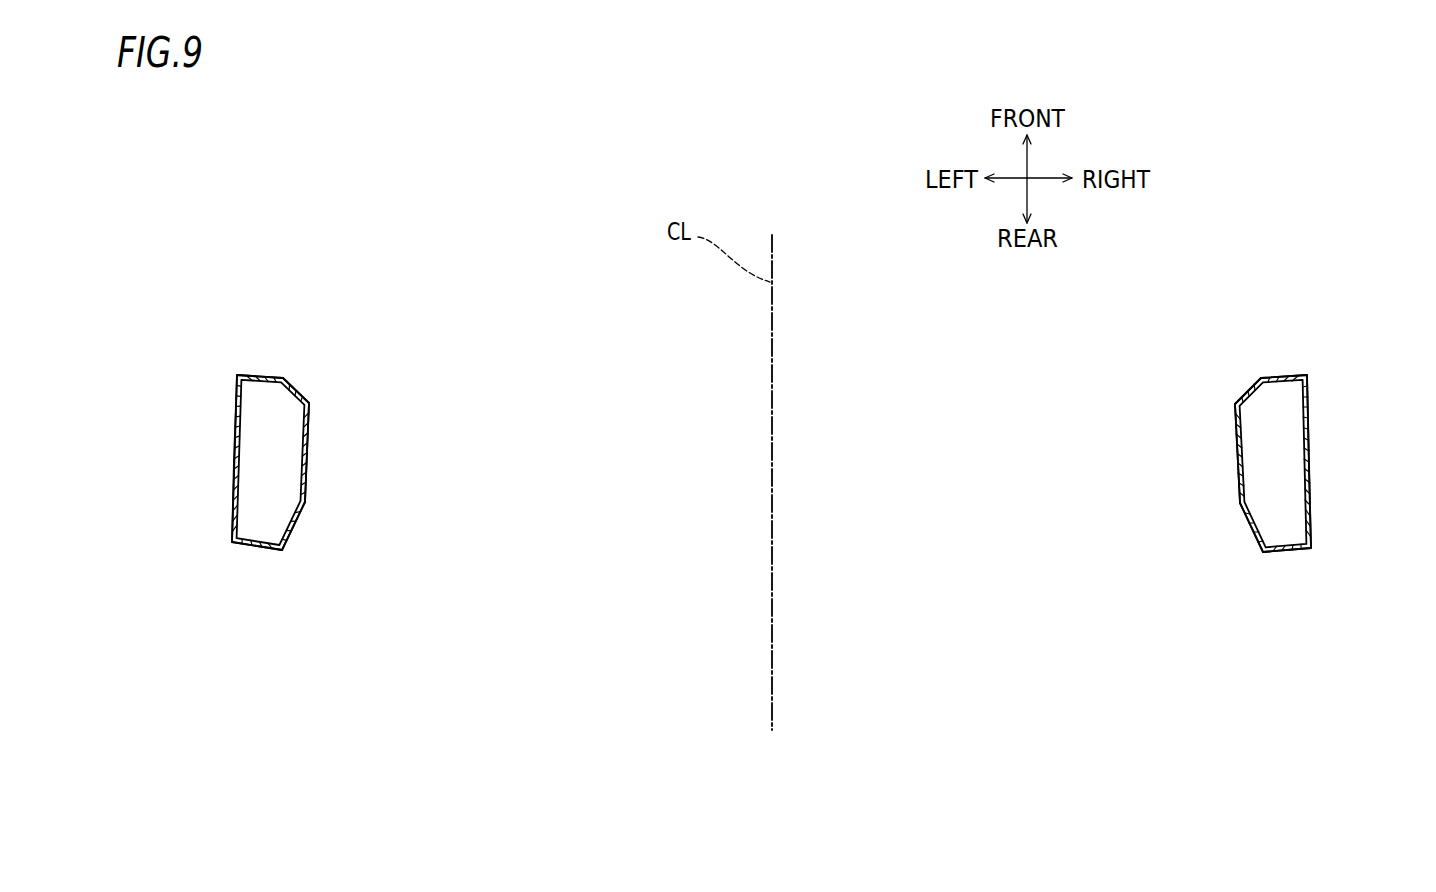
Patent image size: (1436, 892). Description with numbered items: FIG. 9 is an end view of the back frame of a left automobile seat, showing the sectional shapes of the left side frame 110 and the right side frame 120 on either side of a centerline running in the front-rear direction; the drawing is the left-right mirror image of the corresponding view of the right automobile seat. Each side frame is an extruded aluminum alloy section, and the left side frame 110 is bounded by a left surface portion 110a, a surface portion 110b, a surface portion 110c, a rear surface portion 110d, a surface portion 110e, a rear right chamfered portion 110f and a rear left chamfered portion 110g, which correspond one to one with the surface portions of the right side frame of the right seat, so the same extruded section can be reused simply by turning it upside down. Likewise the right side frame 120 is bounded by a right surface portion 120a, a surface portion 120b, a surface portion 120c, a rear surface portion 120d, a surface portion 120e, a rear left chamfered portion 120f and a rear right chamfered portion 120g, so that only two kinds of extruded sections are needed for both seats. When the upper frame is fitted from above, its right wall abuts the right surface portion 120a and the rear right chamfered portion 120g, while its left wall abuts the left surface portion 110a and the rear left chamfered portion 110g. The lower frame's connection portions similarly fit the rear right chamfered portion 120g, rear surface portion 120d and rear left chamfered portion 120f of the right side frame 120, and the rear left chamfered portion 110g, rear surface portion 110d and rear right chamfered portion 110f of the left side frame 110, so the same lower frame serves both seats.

The left side frame 110 is at (235, 398).
The left surface portion 110a is at (235, 455).
The surface portion 110b is at (308, 443).
The surface portion 110c is at (267, 372).
The rear surface portion 110d is at (253, 553).
The surface portion 110e is at (300, 390).
The rear right chamfered portion 110f is at (300, 527).
The rear left chamfered portion 110g is at (233, 510).
The right side frame 120 is at (1312, 405).
The right surface portion 120a is at (1312, 463).
The surface portion 120b is at (1235, 432).
The surface portion 120c is at (1272, 378).
The rear surface portion 120d is at (1292, 555).
The surface portion 120e is at (1247, 388).
The rear left chamfered portion 120f is at (1257, 538).
The rear right chamfered portion 120g is at (1312, 522).